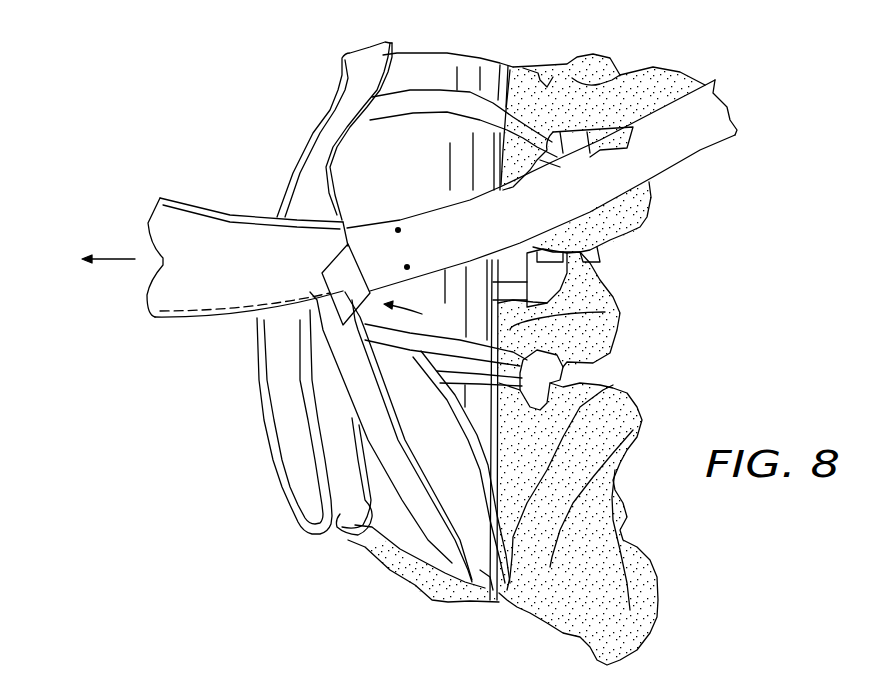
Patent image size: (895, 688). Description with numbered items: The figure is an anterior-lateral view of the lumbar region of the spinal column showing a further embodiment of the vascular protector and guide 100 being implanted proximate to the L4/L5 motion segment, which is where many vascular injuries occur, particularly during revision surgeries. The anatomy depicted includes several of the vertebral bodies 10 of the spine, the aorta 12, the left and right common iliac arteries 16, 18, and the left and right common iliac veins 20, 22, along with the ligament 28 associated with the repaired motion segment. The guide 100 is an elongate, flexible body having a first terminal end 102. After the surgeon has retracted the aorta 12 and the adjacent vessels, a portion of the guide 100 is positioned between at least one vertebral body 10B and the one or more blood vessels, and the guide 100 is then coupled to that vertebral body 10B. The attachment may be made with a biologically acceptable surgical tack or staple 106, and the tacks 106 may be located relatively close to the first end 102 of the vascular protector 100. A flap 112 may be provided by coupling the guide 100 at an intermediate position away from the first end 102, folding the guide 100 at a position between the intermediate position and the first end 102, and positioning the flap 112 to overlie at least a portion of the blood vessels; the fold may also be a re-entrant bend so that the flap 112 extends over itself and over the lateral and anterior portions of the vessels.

The vertebral bodies 10 is at (517, 67).
The vertebral body 10B is at (610, 310).
The aorta 12 is at (368, 62).
The left common iliac artery 16 is at (302, 496).
The right common iliac artery 18 is at (438, 543).
The left common iliac vein 20 is at (348, 518).
The right common iliac vein 22 is at (490, 578).
The ligament 28 is at (437, 66).
The vascular protector and guide 100 is at (683, 140).
The first terminal end 102 is at (424, 314).
The tack or staple 106 is at (398, 230).
The flap 112 is at (348, 277).